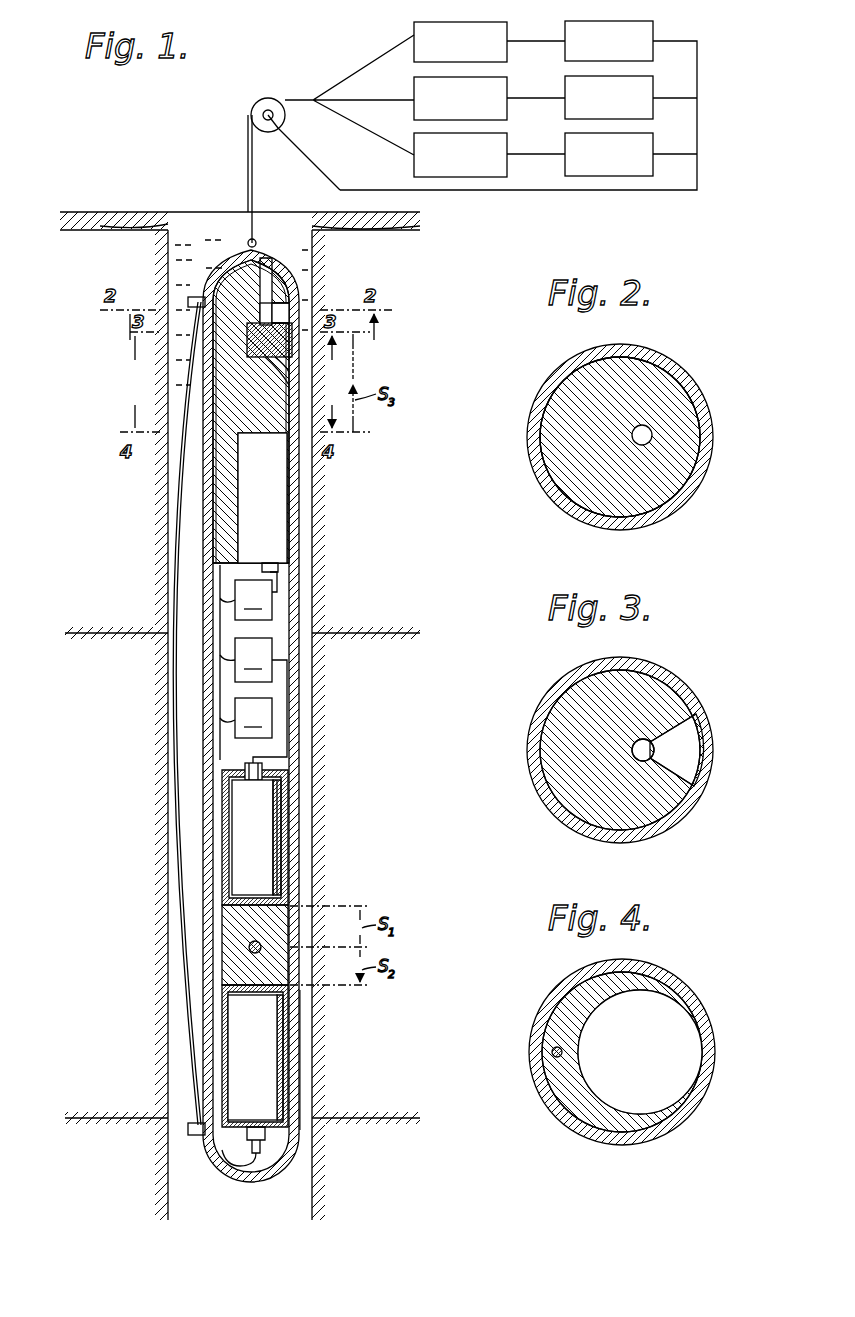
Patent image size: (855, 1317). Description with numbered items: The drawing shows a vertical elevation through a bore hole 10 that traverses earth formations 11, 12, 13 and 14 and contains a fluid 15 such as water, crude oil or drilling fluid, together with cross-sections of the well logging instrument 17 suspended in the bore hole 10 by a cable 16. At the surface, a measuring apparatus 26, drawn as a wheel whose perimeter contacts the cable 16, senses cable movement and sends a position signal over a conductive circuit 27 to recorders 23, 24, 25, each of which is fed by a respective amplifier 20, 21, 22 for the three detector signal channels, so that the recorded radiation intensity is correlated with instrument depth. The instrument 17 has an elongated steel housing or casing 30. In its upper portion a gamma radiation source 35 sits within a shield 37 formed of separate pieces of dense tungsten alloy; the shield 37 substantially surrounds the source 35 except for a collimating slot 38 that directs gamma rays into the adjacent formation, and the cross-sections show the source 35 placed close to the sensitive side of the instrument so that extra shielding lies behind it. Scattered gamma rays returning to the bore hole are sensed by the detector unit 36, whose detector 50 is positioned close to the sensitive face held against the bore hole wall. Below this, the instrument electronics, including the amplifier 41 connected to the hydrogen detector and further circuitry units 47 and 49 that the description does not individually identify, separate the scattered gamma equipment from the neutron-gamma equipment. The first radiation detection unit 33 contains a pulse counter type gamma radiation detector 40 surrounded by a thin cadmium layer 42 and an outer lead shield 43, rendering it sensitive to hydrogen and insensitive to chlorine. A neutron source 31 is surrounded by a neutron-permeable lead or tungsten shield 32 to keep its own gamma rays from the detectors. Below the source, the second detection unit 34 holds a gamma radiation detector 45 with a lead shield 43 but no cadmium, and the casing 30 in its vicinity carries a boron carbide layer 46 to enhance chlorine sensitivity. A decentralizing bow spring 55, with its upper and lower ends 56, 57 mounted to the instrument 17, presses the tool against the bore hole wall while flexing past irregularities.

In FIG. 1, the bore hole 10 is at (178, 212).
In FIG. 1, the earth formation 11 is at (58, 234).
In FIG. 1, the earth formation 12 is at (95, 536).
In FIG. 1, the earth formation 13 is at (95, 826).
In FIG. 1, the earth formation 14 is at (89, 1176).
In FIG. 1, the fluid 15 is at (242, 311).
In FIG. 1, the cable 16 is at (252, 200).
In FIG. 4, the cable 16 is at (552, 1056).
In FIG. 1, the well logging instrument 17 is at (298, 296).
In FIG. 2, the well logging instrument 17 is at (680, 360).
In FIG. 1, the amplifier 20 is at (507, 38).
In FIG. 1, the amplifier 21 is at (507, 92).
In FIG. 1, the amplifier 22 is at (507, 148).
In FIG. 1, the recorder 23 is at (653, 30).
In FIG. 1, the recorder 24 is at (653, 82).
In FIG. 1, the recorder 25 is at (653, 146).
In FIG. 1, the measuring apparatus 26 is at (251, 107).
In FIG. 1, the conductive circuit 27 is at (325, 172).
In FIG. 1, the housing 30 is at (300, 508).
In FIG. 2, the housing 30 is at (698, 398).
In FIG. 3, the housing 30 is at (675, 675).
In FIG. 4, the housing 30 is at (680, 980).
In FIG. 1, the neutron source 31 is at (260, 945).
In FIG. 1, the neutron-permeable shield 32 is at (280, 910).
In FIG. 1, the first radiation detection unit 33 is at (300, 800).
In FIG. 1, the second detection unit 34 is at (290, 1068).
In FIG. 1, the gamma radiation source 35 is at (268, 312).
In FIG. 3, the gamma radiation source 35 is at (656, 750).
In FIG. 1, the detector unit 36 is at (302, 532).
In FIG. 1, the shield 37 is at (272, 390).
In FIG. 2, the shield 37 is at (673, 480).
In FIG. 3, the shield 37 is at (672, 802).
In FIG. 4, the shield 37 is at (580, 988).
In FIG. 1, the collimating slot 38 is at (300, 372).
In FIG. 3, the collimating slot 38 is at (668, 735).
In FIG. 1, the gamma radiation detector 40 is at (259, 815).
In FIG. 1, the amplifier 41 is at (253, 701).
In FIG. 1, the cadmium layer 42 is at (262, 772).
In FIG. 1, the lead shield 43 is at (280, 850).
In FIG. 1, the gamma radiation detector 45 is at (261, 1039).
In FIG. 1, the layer 46 is at (300, 1030).
In FIG. 1, the amplifier 47 is at (246, 718).
In FIG. 1, the amplifier 49 is at (248, 662).
In FIG. 1, the detector 50 is at (272, 520).
In FIG. 4, the detector 50 is at (648, 1038).
In FIG. 1, the decentralizing bow spring 55 is at (178, 915).
In FIG. 1, the upper end 56 is at (190, 297).
In FIG. 1, the lower end 57 is at (196, 1136).